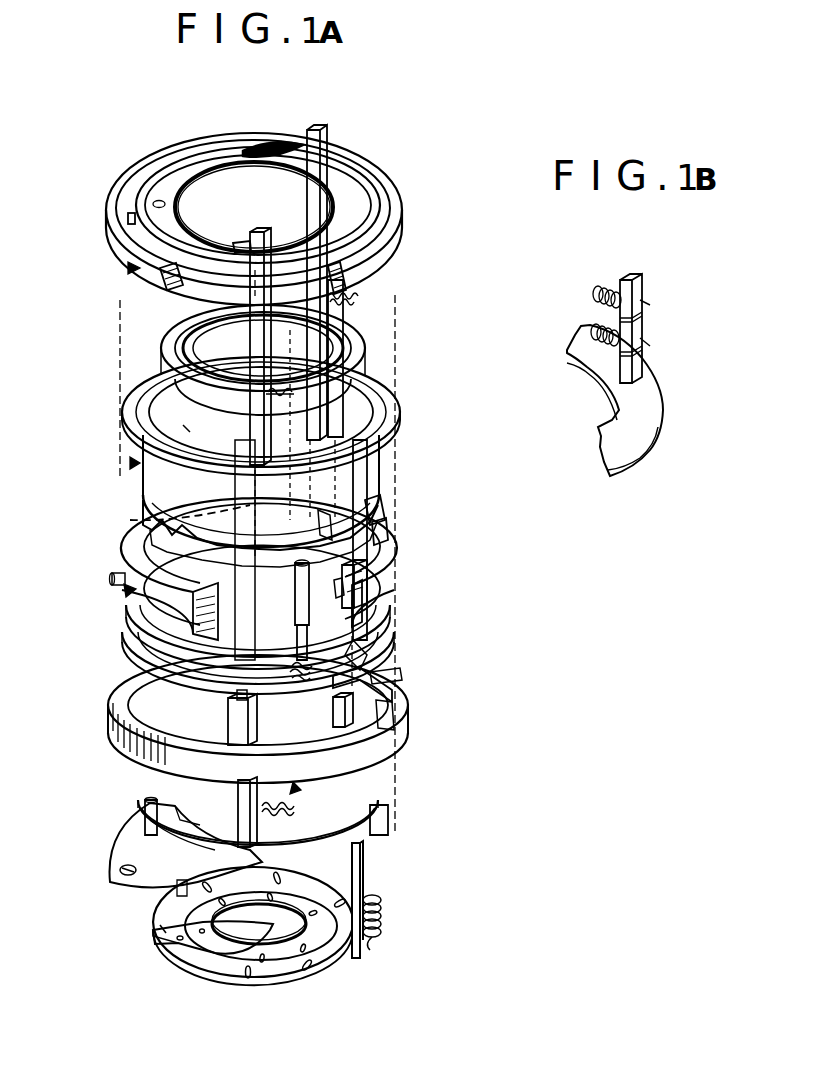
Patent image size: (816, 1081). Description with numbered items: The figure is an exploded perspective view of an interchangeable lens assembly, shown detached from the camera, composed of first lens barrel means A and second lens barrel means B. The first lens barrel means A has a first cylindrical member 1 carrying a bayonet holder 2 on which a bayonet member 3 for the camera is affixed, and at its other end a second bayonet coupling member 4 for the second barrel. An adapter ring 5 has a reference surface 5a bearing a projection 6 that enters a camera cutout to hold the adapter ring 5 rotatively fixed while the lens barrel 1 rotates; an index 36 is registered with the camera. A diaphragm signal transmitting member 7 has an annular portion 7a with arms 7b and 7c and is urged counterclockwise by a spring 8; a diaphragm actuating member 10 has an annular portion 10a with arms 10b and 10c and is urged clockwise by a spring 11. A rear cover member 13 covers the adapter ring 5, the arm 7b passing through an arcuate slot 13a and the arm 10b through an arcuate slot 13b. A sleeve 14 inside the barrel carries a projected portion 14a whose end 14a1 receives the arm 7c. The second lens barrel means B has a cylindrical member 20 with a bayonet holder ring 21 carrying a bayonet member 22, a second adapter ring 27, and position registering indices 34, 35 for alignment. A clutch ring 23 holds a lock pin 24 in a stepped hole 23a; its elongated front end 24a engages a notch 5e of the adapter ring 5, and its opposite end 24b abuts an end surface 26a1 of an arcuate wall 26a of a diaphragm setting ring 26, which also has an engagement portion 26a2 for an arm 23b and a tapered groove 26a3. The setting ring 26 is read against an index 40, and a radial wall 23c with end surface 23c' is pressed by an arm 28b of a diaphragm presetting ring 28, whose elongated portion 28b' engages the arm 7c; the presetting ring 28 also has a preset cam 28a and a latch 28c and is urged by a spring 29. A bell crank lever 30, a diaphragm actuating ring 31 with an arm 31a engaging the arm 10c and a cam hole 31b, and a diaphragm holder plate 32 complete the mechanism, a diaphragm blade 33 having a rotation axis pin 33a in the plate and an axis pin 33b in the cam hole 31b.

In FIG. 1A, the first cylindrical member 1 is at (377, 450).
In FIG. 1A, the bayonet holder 2 is at (385, 270).
In FIG. 1A, the bayonet member 3 is at (380, 238).
In FIG. 1A, the second bayonet coupling member 4 is at (390, 543).
In FIG. 1A, the adapter ring 5 is at (375, 205).
In FIG. 1A, the reference surface 5a is at (195, 284).
In FIG. 1A, the notch 5e is at (353, 293).
In FIG. 1A, the projection 6 is at (126, 217).
In FIG. 1A, the diaphragm signal transmitting member 7 is at (185, 372).
In FIG. 1A, the annular portion 7a is at (170, 390).
In FIG. 1A, the arm portion 7b is at (259, 232).
In FIG. 1A, the arm portion 7c is at (130, 520).
In FIG. 1A, the spring 8 is at (353, 433).
In FIG. 1B, the spring 8 is at (645, 345).
In FIG. 1A, the diaphragm actuating member 10 is at (340, 392).
In FIG. 1A, the annular portion 10a is at (180, 355).
In FIG. 1A, the arm portion 10b is at (320, 142).
In FIG. 1B, the arm portion 10b is at (630, 280).
In FIG. 1A, the arm portion 10c is at (377, 597).
In FIG. 1A, the spring 11 is at (358, 300).
In FIG. 1B, the spring 11 is at (640, 302).
In FIG. 1A, the rear cover member 13 is at (232, 158).
In FIG. 1A, the arcuate slot 13a is at (238, 246).
In FIG. 1A, the arcuate slot 13b is at (273, 145).
In FIG. 1A, the sleeve 14 is at (385, 440).
In FIG. 1B, the sleeve 14 is at (655, 395).
In FIG. 1A, the projected portion 14a is at (385, 475).
In FIG. 1A, the end of projected portion 14a1 is at (388, 520).
In FIG. 1A, the cylindrical member 20 is at (387, 823).
In FIG. 1A, the bayonet holder ring 21 is at (167, 617).
In FIG. 1A, the bayonet member 22 is at (170, 593).
In FIG. 1A, the clutch ring 23 is at (143, 655).
In FIG. 1A, the stepped hole 23a is at (383, 677).
In FIG. 1A, the arm 23b is at (385, 715).
In FIG. 1A, the radial wall 23c is at (182, 698).
In FIG. 1A, the end surface 23c' is at (283, 610).
In FIG. 1A, the lock pin 24 is at (370, 646).
In FIG. 1A, the elongated front end 24a is at (345, 340).
In FIG. 1A, the opposite end 24b is at (393, 707).
In FIG. 1A, the diaphragm setting ring 26 is at (140, 760).
In FIG. 1A, the arcuate wall 26a is at (153, 727).
In FIG. 1A, the end surface 26a1 is at (333, 683).
In FIG. 1A, the engagement portion 26a2 is at (230, 707).
In FIG. 1A, the groove 26a3 is at (237, 694).
In FIG. 1A, the second adapter ring 27 is at (377, 587).
In FIG. 1A, the diaphragm presetting ring 28 is at (170, 836).
In FIG. 1A, the preset cam 28a is at (143, 812).
In FIG. 1A, the arm 28b is at (222, 812).
In FIG. 1A, the elongated portion 28b' is at (120, 445).
In FIG. 1A, the latch 28c is at (390, 840).
In FIG. 1A, the spring 29 is at (290, 812).
In FIG. 1A, the bell crank lever 30 is at (120, 876).
In FIG. 1A, the diaphragm actuating ring 31 is at (300, 972).
In FIG. 1A, the arm 31a is at (383, 548).
In FIG. 1A, the cam hole 31b is at (222, 975).
In FIG. 1A, the diaphragm holder plate 32 is at (382, 898).
In FIG. 1A, the diaphragm blade 33 is at (210, 955).
In FIG. 1A, the rotation axis pin 33a is at (195, 948).
In FIG. 1A, the axis pin 33b is at (160, 934).
In FIG. 1A, the position registering index 34 is at (124, 590).
In FIG. 1A, the position registering index 35 is at (130, 463).
In FIG. 1A, the index 36 is at (128, 268).
In FIG. 1A, the index 40 is at (300, 788).
In FIG. 1A, the first lens barrel means A is at (390, 178).
In FIG. 1A, the second lens barrel means B is at (397, 772).